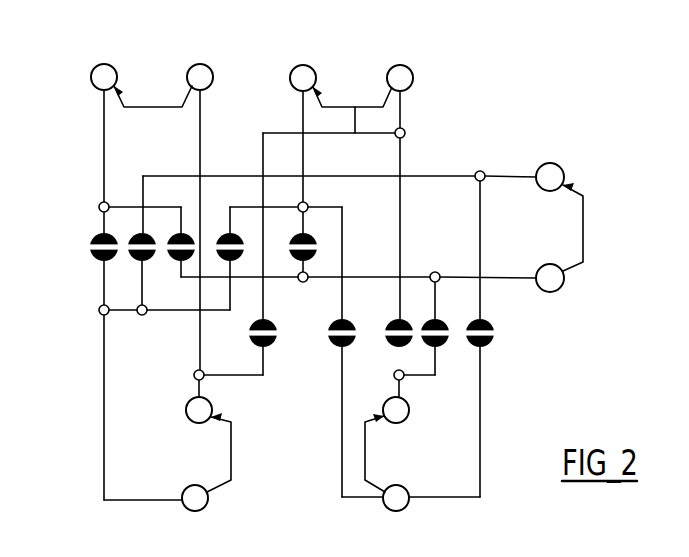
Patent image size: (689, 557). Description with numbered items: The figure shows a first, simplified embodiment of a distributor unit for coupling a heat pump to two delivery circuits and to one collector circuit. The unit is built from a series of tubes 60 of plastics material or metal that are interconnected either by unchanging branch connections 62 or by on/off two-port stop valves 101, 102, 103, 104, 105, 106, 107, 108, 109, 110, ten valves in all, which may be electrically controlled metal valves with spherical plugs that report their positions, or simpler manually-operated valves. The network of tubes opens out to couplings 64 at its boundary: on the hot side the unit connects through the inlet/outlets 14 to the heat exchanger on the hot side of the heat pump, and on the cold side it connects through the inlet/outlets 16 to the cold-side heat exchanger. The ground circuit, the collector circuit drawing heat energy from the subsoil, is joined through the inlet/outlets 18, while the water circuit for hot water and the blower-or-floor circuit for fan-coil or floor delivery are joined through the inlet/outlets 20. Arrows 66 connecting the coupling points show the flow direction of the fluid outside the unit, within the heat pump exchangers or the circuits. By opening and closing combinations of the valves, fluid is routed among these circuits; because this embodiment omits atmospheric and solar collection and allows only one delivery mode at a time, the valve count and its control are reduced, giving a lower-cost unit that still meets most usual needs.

The inlet/outlets 20 is at (92, 44).
The couplings 64 is at (411, 71).
The branch connections 62 is at (406, 130).
The tubes 60 is at (404, 156).
The arrows 66 is at (356, 112).
The stop valve 101 is at (96, 235).
The stop valve 102 is at (137, 233).
The stop valve 103 is at (186, 233).
The stop valve 104 is at (221, 235).
The stop valve 105 is at (316, 242).
The stop valve 106 is at (270, 348).
The stop valve 107 is at (336, 348).
The stop valve 108 is at (392, 348).
The stop valve 109 is at (445, 348).
The stop valve 110 is at (490, 348).
The inlet/outlets 14 is at (225, 516).
The inlet/outlets 16 is at (425, 516).
The inlet/outlets 18 is at (634, 167).